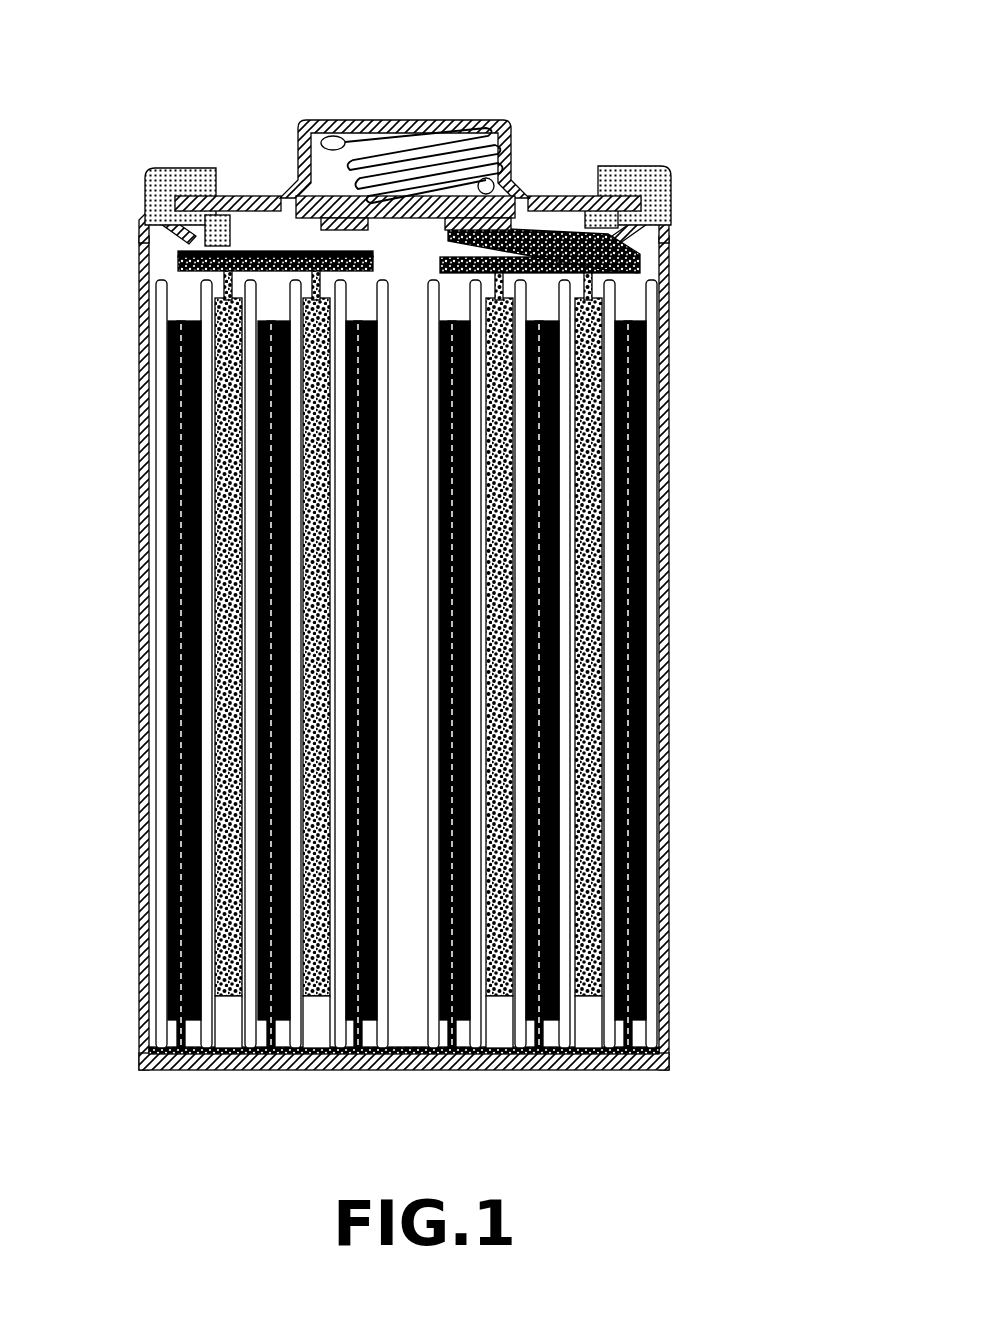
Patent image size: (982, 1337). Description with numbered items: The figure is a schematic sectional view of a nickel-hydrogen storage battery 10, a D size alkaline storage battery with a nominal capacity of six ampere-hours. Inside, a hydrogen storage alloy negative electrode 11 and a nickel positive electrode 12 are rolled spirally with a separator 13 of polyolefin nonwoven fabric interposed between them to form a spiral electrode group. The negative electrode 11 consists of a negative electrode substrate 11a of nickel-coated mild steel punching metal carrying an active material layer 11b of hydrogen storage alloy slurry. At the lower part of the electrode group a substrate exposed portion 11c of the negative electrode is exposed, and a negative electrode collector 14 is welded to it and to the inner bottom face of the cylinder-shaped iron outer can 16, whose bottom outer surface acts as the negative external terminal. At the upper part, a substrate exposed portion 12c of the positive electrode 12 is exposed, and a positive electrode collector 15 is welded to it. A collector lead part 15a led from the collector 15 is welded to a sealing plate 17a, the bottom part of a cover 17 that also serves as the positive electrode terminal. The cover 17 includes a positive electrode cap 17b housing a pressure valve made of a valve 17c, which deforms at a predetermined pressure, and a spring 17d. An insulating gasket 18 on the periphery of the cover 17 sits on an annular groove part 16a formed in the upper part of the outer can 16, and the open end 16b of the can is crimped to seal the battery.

The nickel-hydrogen storage battery 10 is at (537, 93).
The hydrogen storage alloy negative electrode 11 is at (772, 838).
The negative electrode substrate 11a is at (638, 863).
The active material layer 11b is at (638, 958).
The substrate exposed portion 11c is at (628, 1025).
The nickel positive electrode 12 is at (600, 327).
The substrate exposed portion 12c is at (625, 262).
The separator 13 is at (600, 620).
The negative electrode collector 14 is at (485, 1055).
The positive electrode collector 15 is at (170, 246).
The collector lead part 15a is at (535, 205).
The outer can 16 is at (661, 763).
The annular groove part 16a is at (664, 203).
The open end 16b is at (617, 160).
The cover 17 is at (272, 107).
The sealing plate 17a is at (235, 193).
The positive electrode cap 17b is at (503, 142).
The valve 17c is at (470, 135).
The spring 17d is at (398, 145).
The insulating gasket 18 is at (140, 190).